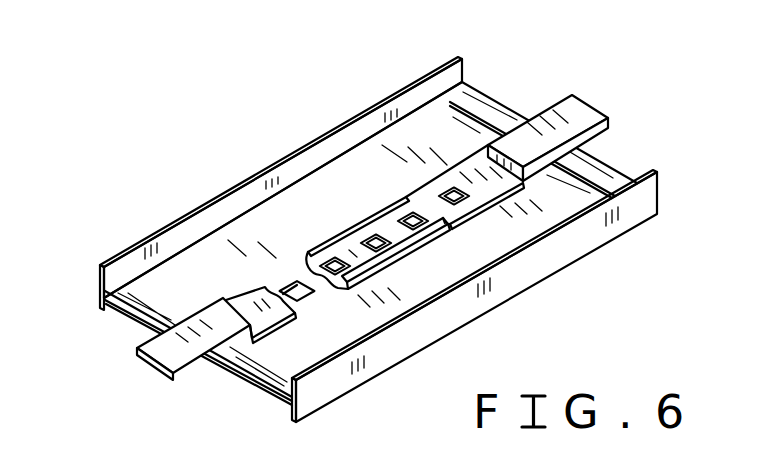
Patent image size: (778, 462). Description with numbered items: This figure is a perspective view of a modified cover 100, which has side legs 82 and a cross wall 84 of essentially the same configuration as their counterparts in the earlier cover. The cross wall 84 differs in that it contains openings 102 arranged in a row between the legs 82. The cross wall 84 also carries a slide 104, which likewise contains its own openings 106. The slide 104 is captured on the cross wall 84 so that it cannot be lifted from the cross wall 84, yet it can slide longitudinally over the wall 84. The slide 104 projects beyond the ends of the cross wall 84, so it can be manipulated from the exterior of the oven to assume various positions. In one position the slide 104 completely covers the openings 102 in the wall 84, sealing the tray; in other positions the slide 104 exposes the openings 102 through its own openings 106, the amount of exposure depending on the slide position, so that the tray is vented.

The side legs 82 is at (120, 252).
The cross wall 84 is at (355, 173).
The modified cover 100 is at (343, 239).
The openings 102 is at (325, 246).
The slide 104 is at (208, 305).
The openings 106 is at (380, 236).